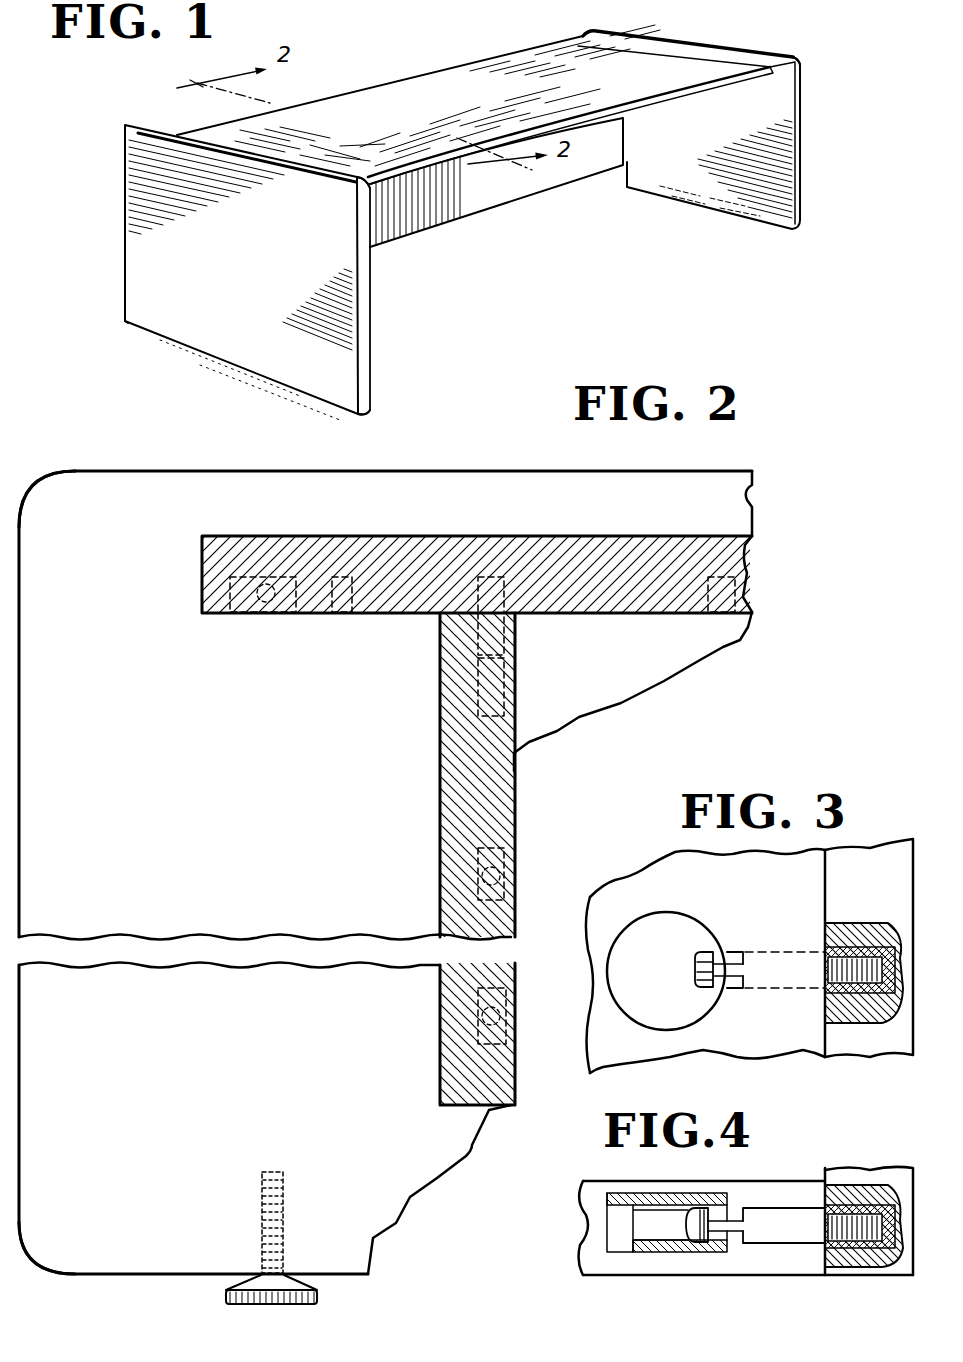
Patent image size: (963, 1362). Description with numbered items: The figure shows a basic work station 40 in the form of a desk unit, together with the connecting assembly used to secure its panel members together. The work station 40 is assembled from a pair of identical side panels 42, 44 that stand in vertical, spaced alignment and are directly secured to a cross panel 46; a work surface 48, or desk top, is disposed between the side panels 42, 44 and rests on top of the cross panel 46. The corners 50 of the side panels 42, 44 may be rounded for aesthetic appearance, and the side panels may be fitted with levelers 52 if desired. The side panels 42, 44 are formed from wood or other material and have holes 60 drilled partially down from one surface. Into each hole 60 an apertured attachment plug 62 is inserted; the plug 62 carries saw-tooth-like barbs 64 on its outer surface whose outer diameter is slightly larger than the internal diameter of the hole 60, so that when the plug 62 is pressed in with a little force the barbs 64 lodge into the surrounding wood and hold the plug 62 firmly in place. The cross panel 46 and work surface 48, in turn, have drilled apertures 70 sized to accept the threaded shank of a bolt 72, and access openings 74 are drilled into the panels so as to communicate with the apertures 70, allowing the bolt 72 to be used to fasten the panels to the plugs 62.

In FIG. 1, the work station 40 is at (748, 36).
In FIG. 1, the side panel 42 is at (786, 202).
In FIG. 2, the side panel 42 is at (278, 776).
In FIG. 1, the side panel 44 is at (225, 303).
In FIG. 1, the cross panel 46 is at (600, 147).
In FIG. 2, the cross panel 46 is at (516, 746).
In FIG. 1, the work surface 48 is at (487, 82).
In FIG. 2, the work surface 48 is at (728, 557).
In FIG. 1, the corners 50 is at (798, 58).
In FIG. 2, the corners 50 is at (67, 453).
In FIG. 2, the levelers 52 is at (276, 1292).
In FIG. 3, the holes 60 is at (875, 935).
In FIG. 4, the holes 60 is at (873, 1195).
In FIG. 3, the attachment plug 62 is at (866, 998).
In FIG. 4, the attachment plug 62 is at (878, 1250).
In FIG. 3, the barbs 64 is at (838, 946).
In FIG. 4, the barbs 64 is at (840, 1250).
In FIG. 2, the apertures 70 is at (510, 580).
In FIG. 3, the apertures 70 is at (752, 990).
In FIG. 4, the apertures 70 is at (778, 1208).
In FIG. 3, the bolt 72 is at (724, 965).
In FIG. 4, the bolt 72 is at (733, 1231).
In FIG. 2, the access openings 74 is at (508, 845).
In FIG. 3, the access openings 74 is at (652, 1018).